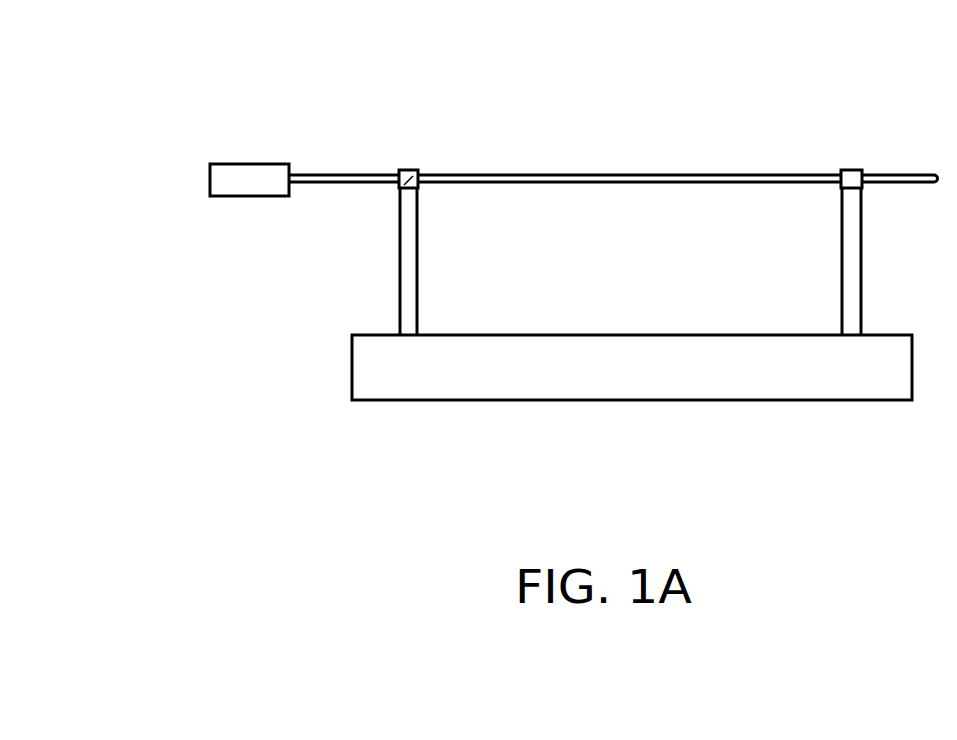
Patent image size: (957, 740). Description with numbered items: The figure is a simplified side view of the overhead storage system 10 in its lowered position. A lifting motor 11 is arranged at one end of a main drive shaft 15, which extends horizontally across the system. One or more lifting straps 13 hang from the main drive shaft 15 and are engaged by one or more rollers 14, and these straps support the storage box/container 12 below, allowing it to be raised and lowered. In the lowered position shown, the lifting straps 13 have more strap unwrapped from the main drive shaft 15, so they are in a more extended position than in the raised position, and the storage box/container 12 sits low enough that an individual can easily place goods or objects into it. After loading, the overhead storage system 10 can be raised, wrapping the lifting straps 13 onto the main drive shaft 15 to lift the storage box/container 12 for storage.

The overhead storage system 10 is at (434, 491).
The lifting motor 11 is at (245, 172).
The storage box/container 12 is at (635, 363).
The lifting straps 13 is at (402, 263).
The rollers 14 is at (408, 181).
The main drive shaft 15 is at (658, 178).